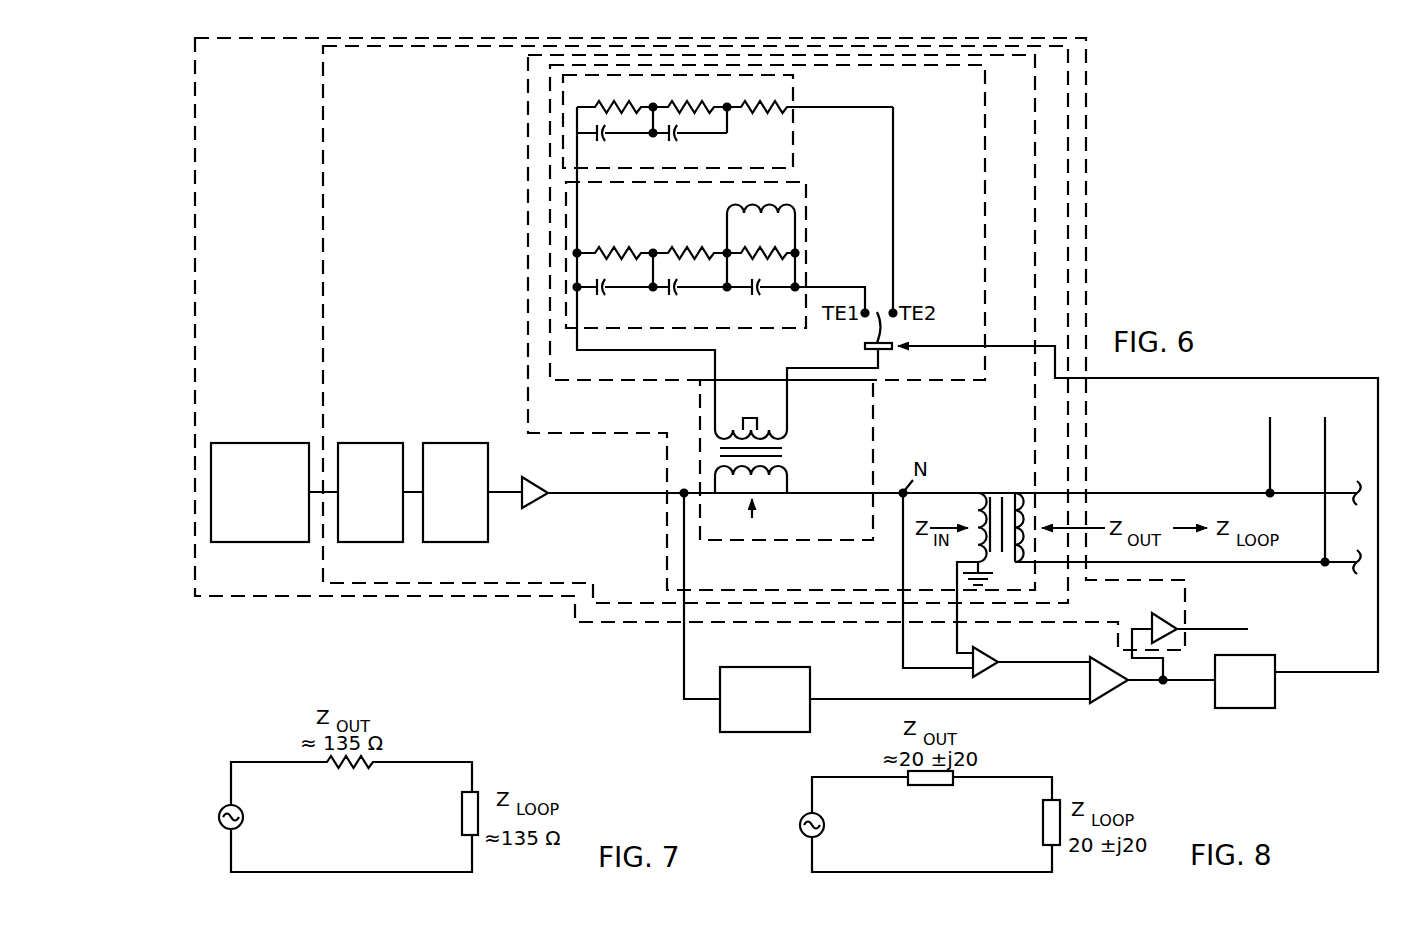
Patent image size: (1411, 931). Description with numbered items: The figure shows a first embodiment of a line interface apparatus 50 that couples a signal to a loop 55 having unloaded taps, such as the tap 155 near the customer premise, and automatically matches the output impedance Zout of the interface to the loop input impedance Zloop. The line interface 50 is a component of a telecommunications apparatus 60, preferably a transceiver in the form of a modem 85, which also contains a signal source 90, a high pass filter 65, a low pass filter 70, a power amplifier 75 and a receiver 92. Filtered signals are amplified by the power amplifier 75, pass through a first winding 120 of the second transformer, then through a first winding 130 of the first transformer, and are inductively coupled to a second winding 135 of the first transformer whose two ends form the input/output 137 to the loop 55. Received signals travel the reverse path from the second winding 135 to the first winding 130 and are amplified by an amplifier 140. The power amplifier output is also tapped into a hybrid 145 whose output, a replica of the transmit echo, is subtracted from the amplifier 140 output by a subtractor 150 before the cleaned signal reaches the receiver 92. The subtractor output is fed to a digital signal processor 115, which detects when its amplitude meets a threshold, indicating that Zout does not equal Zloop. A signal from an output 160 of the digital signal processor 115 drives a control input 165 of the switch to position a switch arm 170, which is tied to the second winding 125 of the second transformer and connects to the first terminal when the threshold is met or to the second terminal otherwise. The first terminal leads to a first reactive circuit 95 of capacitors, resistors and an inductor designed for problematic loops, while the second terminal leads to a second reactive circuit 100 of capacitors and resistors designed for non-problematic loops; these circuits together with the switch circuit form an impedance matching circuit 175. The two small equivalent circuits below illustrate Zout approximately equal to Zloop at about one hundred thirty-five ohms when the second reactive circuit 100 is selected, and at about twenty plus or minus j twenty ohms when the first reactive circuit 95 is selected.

The line interface apparatus 50 is at (524, 118).
The loop 55 is at (1127, 485).
The telecommunications apparatus 60 is at (318, 332).
The high pass filter 65 is at (355, 443).
The low pass filter 70 is at (440, 443).
The power amplifier 75 is at (522, 484).
The modem 85 is at (253, 614).
The signal source 90 is at (258, 443).
The receiver 92 is at (1150, 620).
The first reactive circuit 95 is at (812, 213).
The second reactive circuit 100 is at (797, 123).
The digital signal processor 115 is at (1278, 661).
The first winding of the second transformer T2 120 is at (789, 489).
The second winding of the second transformer T2 125 is at (787, 420).
The first winding of the transformer T1 130 is at (978, 490).
The second winding of the transformer T1 135 is at (1015, 485).
The input/output 137 is at (1021, 480).
The amplifier 140 is at (985, 656).
The hybrid 145 is at (780, 667).
The subtractor 150 is at (1128, 700).
The tap 155 is at (1263, 441).
The output of the DSP 160 is at (1278, 685).
The control input of switch S 165 is at (888, 350).
The switch arm 170 is at (877, 312).
The impedance matching circuit 175 is at (647, 388).